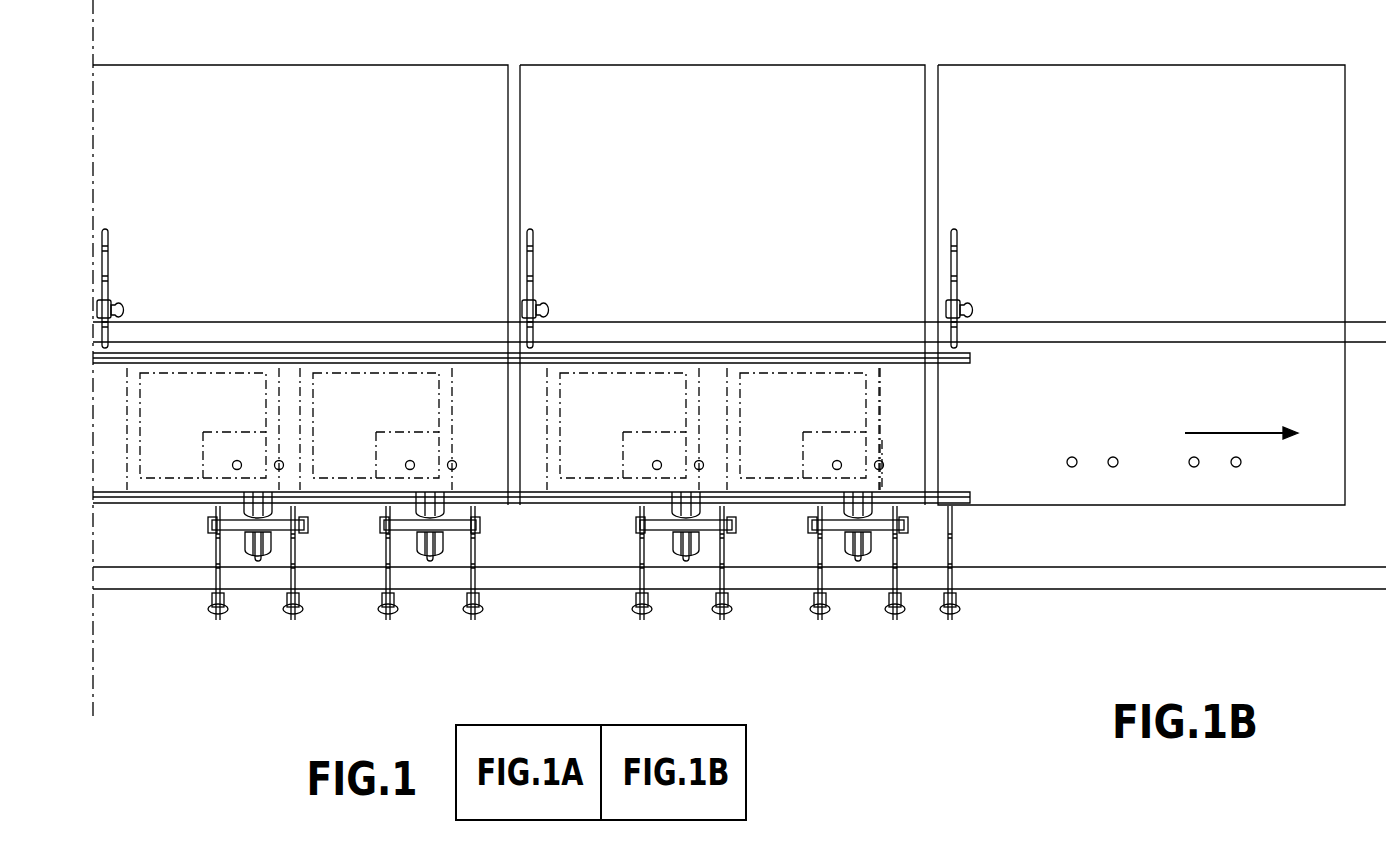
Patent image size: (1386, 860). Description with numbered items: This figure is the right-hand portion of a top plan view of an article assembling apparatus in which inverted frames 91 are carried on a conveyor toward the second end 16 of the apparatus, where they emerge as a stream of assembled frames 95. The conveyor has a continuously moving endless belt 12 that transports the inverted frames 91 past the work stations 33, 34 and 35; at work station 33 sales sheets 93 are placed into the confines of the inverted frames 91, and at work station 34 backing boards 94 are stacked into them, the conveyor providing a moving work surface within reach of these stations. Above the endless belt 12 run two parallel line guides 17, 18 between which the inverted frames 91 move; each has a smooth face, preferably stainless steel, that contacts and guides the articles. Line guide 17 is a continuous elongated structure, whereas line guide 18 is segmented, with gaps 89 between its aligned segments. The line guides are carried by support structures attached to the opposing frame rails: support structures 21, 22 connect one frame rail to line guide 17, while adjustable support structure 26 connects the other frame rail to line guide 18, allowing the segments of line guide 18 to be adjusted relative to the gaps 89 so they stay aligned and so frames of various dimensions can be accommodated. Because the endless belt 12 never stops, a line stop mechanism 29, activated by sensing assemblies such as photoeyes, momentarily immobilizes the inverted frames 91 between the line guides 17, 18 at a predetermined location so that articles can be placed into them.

The endless belt 12 is at (1232, 378).
The second end 16 is at (1268, 468).
The line guide 17 is at (232, 363).
The line guide 18 is at (957, 493).
The support structure 21 is at (118, 278).
The support structure 22 is at (963, 268).
The adjustable support structure 26 is at (310, 553).
The line stop mechanism 29 is at (885, 468).
The work station 33 is at (313, 135).
The work station 34 is at (750, 140).
The work station 35 is at (1185, 140).
The gaps 89 is at (285, 483).
The inverted frames 91 is at (172, 398).
The sales sheets 93 is at (350, 405).
The backing boards 94 is at (773, 405).
The assembled frames 95 is at (895, 398).